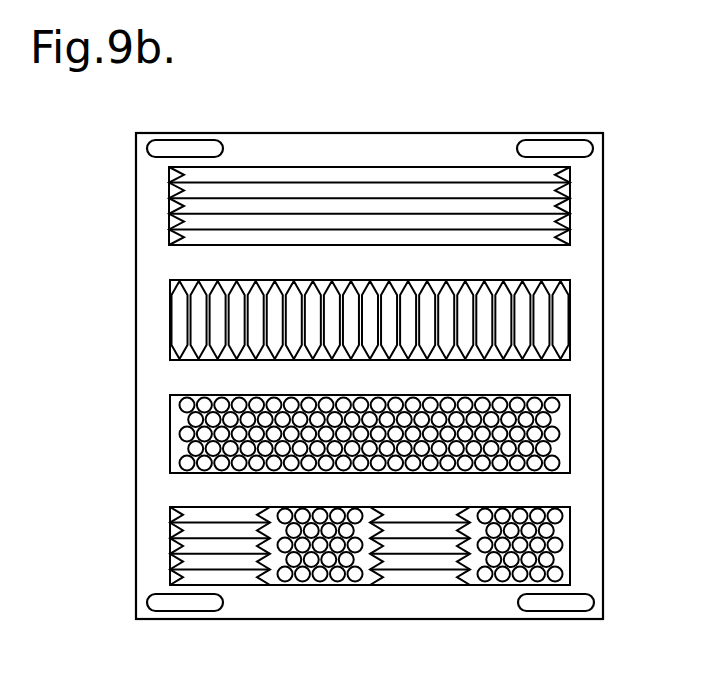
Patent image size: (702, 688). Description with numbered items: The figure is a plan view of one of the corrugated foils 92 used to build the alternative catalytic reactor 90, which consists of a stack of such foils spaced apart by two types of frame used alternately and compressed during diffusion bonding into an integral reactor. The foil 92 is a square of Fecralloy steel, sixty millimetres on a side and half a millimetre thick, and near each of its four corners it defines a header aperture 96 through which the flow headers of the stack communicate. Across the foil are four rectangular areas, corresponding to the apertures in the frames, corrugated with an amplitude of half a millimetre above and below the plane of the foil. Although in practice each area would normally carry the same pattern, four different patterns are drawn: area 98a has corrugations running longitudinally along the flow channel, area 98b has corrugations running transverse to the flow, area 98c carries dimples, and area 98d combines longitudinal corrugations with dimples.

The alternative reactor 90 is at (385, 117).
The corrugated foil 92 is at (317, 150).
The header apertures 96 is at (185, 153).
The corrugated area with longitudinal corrugations 98a is at (180, 208).
The corrugated area with transverse corrugations 98b is at (175, 316).
The dimpled area 98c is at (180, 437).
The corrugated and dimpled area 98d is at (175, 538).